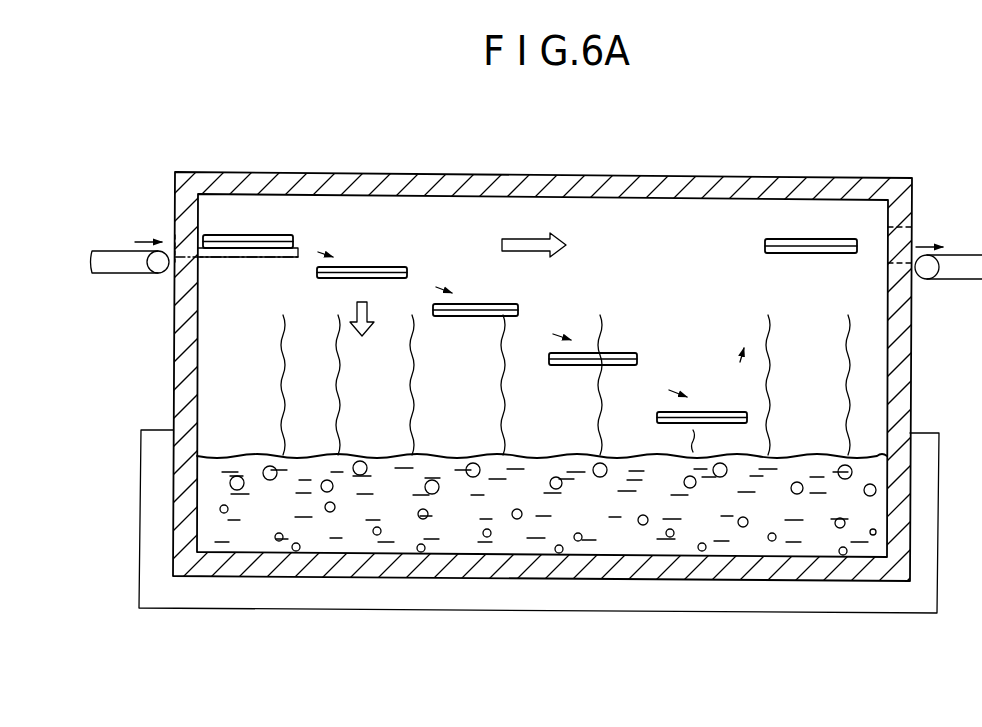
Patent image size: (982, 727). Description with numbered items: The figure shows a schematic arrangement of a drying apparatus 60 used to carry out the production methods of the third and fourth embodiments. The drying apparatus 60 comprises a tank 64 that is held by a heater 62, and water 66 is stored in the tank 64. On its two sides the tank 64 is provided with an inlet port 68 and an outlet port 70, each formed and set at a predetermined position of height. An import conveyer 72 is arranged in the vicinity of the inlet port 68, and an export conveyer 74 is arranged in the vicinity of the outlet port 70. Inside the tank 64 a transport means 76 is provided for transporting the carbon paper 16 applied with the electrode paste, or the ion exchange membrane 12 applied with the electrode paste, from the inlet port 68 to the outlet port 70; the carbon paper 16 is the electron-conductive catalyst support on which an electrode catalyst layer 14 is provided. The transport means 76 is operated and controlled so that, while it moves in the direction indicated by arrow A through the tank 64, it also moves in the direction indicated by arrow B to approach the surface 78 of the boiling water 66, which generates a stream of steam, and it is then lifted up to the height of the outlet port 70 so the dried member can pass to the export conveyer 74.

The drying apparatus 60 is at (753, 158).
The heater 62 is at (335, 600).
The tank 64 is at (173, 371).
The water 66 is at (542, 542).
The inlet port 68 is at (173, 232).
The outlet port 70 is at (912, 240).
The import conveyer 72 is at (108, 250).
The export conveyer 74 is at (950, 280).
The transport means 76 is at (237, 262).
The surface of boiling water 78 is at (432, 455).
The electrode catalyst layer 14 is at (266, 236).
The carbon paper 16 is at (577, 320).
The ion exchange membrane 12 is at (298, 248).